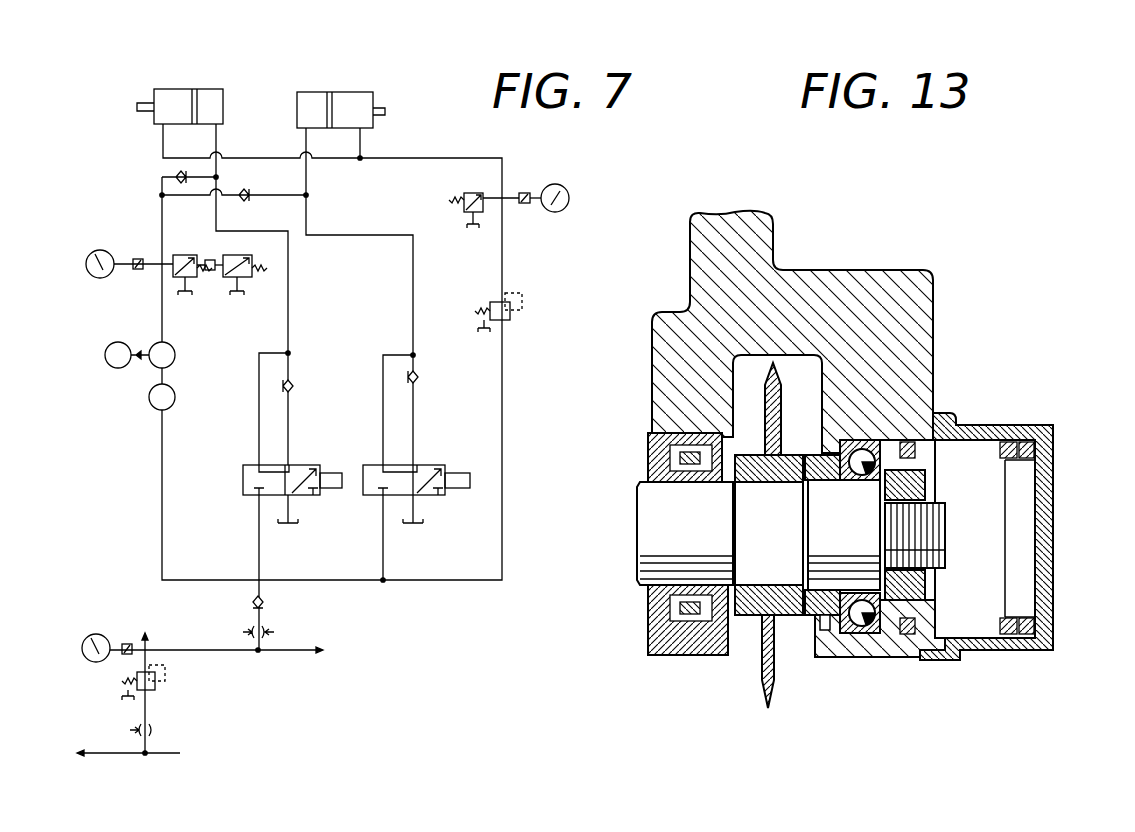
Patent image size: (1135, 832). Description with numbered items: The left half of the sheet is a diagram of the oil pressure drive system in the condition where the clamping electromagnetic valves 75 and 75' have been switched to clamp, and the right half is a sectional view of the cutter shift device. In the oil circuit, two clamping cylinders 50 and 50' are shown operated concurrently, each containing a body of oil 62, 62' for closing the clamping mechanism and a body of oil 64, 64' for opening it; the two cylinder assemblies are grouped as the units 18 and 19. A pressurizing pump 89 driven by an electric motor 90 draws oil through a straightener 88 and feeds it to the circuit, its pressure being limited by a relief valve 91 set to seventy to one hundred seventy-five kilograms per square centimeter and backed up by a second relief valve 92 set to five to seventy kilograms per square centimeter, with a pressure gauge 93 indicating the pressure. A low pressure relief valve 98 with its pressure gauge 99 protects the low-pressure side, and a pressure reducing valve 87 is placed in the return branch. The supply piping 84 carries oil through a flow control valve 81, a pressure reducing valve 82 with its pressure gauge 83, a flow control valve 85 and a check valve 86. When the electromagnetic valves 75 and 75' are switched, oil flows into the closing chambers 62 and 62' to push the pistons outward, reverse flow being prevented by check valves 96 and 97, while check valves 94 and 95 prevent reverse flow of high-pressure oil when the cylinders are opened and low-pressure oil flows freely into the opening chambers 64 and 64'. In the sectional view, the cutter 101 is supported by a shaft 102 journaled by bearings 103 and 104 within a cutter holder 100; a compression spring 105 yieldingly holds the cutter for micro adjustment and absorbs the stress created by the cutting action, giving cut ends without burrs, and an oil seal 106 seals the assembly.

In FIG. 7, the first fluid cylinder assembly 18 is at (118, 88).
In FIG. 7, the second fluid cylinder assembly 19 is at (412, 88).
In FIG. 7, the clamping cylinder 50 is at (315, 125).
In FIG. 7, the clamping cylinder 50' is at (215, 106).
In FIG. 7, the body of oil for closing the clamping mechanism 62 is at (332, 90).
In FIG. 7, the body of oil for closing the clamping mechanism 62' is at (217, 88).
In FIG. 7, the body of oil for opening the clamping mechanism 64 is at (384, 87).
In FIG. 7, the body of oil for opening the clamping mechanism 64' is at (128, 128).
In FIG. 7, the clamping electromagnetic valve 75 is at (422, 470).
In FIG. 7, the clamping electromagnetic valve 75' is at (301, 470).
In FIG. 7, the flow control valve 81 is at (157, 729).
In FIG. 7, the pressure reducing valve 82 is at (158, 682).
In FIG. 7, the pressure gauge 83 is at (96, 657).
In FIG. 7, the piping 84 is at (220, 648).
In FIG. 7, the flow control valve 85 is at (278, 633).
In FIG. 7, the check valve 86 is at (265, 601).
In FIG. 7, the pressure reducing valve 87 is at (509, 316).
In FIG. 7, the straightener 88 is at (149, 405).
In FIG. 7, the pressurizing pump 89 is at (176, 357).
In FIG. 7, the electric motor 90 is at (112, 348).
In FIG. 7, the relief valve 91 is at (192, 262).
In FIG. 7, the second relief valve 92 is at (236, 262).
In FIG. 7, the pressure gauge 93 is at (118, 274).
In FIG. 7, the check valve 94 is at (162, 177).
In FIG. 7, the check valve 95 is at (244, 185).
In FIG. 7, the check valve 96 is at (304, 394).
In FIG. 7, the check valve 97 is at (429, 383).
In FIG. 7, the low pressure relief valve 98 is at (484, 198).
In FIG. 7, the pressure gauge 99 is at (546, 185).
In FIG. 13, the cutter holder 100 is at (866, 280).
In FIG. 13, the cutter 101 is at (760, 677).
In FIG. 13, the shaft 102 is at (650, 560).
In FIG. 13, the bearing 103 is at (683, 563).
In FIG. 13, the bearing 104 is at (862, 480).
In FIG. 13, the spring 105 is at (952, 427).
In FIG. 13, the oil seal 106 is at (838, 659).